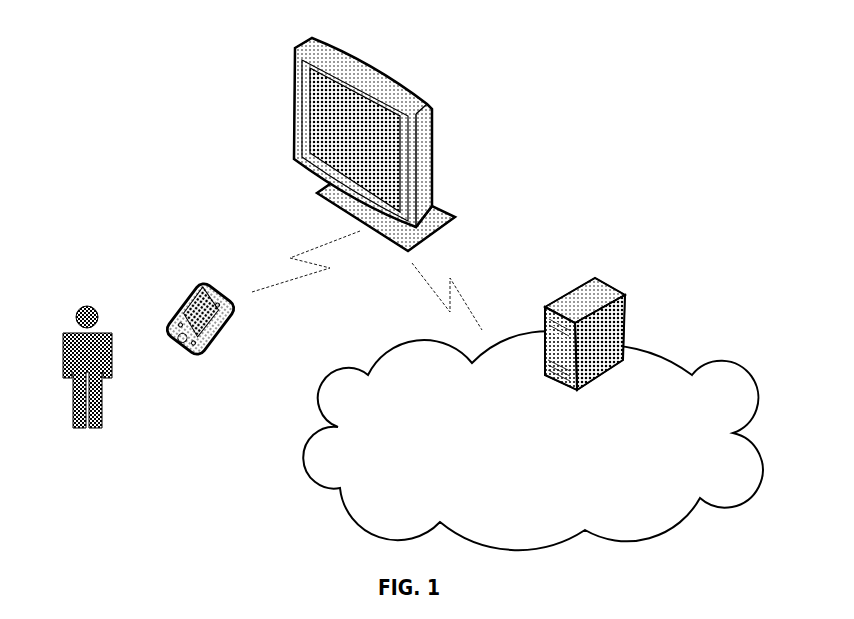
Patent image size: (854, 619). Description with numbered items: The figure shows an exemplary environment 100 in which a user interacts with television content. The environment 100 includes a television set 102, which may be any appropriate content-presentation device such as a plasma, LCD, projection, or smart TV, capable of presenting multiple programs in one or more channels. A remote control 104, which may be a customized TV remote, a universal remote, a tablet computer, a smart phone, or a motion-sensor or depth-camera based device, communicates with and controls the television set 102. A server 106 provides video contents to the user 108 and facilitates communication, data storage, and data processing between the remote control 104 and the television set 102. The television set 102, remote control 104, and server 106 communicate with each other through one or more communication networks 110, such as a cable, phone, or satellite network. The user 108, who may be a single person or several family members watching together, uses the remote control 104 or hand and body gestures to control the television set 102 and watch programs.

The environment 100 is at (150, 44).
The television set 102 is at (433, 124).
The remote control 104 is at (223, 340).
The server 106 is at (623, 333).
The user 108 is at (100, 420).
The network 110 is at (404, 428).